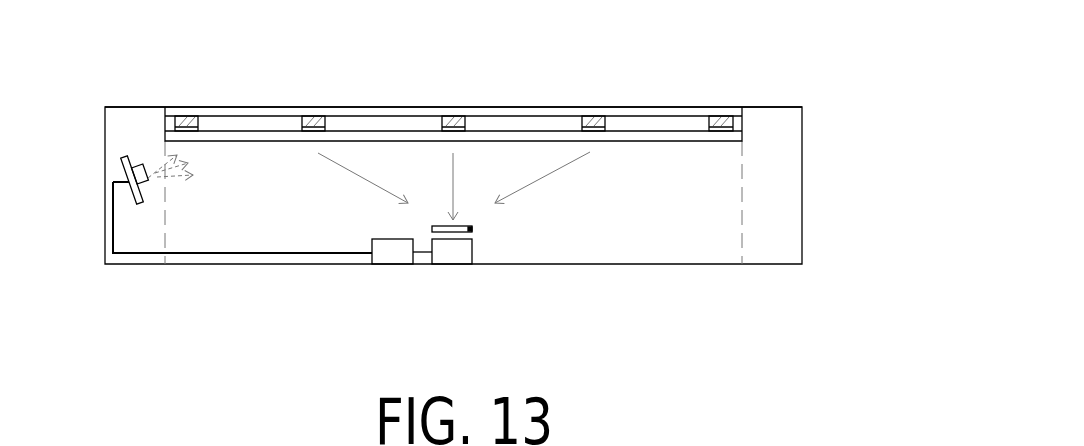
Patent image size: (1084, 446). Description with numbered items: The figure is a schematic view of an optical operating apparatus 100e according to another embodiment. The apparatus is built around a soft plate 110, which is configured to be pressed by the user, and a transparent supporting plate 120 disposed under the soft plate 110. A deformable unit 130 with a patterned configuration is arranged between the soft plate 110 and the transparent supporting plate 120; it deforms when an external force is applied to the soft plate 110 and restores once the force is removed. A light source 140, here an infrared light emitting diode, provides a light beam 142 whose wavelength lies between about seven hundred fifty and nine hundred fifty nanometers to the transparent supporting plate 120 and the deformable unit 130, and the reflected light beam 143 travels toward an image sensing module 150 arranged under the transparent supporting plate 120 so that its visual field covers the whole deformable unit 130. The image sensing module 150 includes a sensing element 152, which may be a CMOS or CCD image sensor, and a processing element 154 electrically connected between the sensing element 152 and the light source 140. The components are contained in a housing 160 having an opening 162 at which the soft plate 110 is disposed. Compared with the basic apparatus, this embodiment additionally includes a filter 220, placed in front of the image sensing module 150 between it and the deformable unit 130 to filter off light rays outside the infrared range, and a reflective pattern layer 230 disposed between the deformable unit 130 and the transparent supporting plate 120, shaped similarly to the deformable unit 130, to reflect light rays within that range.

The optical operating apparatus 100e is at (805, 335).
The soft plate 110 is at (372, 113).
The transparent supporting plate 120 is at (740, 138).
The deformable unit 130 is at (727, 123).
The light source 140 is at (123, 159).
The light beam 142 is at (175, 176).
The reflected light beam 143 is at (453, 172).
The image sensing module 150 is at (420, 303).
The sensing element 152 is at (452, 281).
The processing element 154 is at (383, 267).
The housing 160 is at (802, 232).
The opening 162 is at (740, 105).
The filter 220 is at (471, 229).
The reflective pattern layer 230 is at (708, 130).